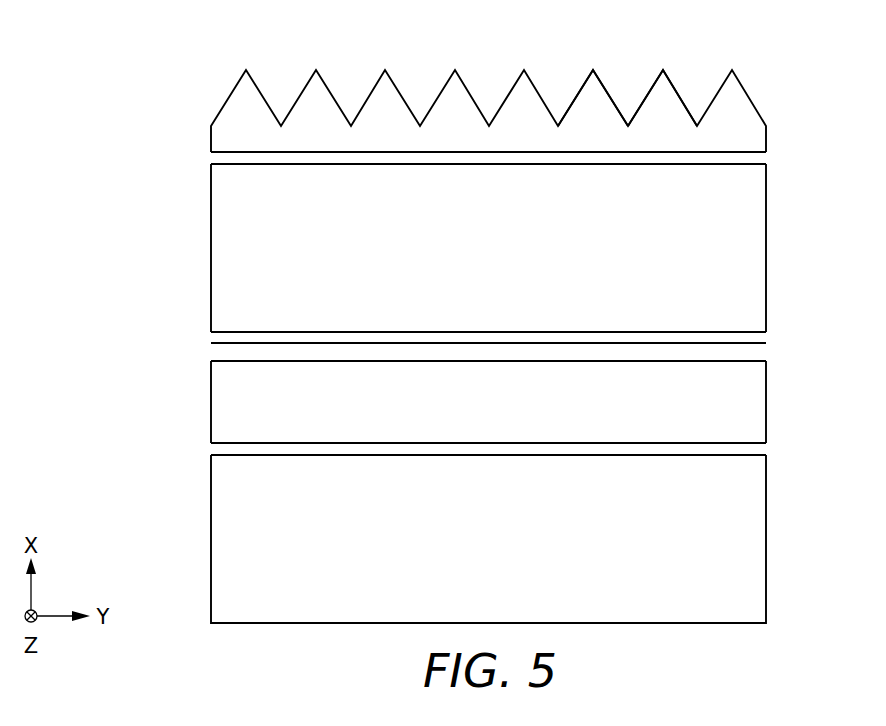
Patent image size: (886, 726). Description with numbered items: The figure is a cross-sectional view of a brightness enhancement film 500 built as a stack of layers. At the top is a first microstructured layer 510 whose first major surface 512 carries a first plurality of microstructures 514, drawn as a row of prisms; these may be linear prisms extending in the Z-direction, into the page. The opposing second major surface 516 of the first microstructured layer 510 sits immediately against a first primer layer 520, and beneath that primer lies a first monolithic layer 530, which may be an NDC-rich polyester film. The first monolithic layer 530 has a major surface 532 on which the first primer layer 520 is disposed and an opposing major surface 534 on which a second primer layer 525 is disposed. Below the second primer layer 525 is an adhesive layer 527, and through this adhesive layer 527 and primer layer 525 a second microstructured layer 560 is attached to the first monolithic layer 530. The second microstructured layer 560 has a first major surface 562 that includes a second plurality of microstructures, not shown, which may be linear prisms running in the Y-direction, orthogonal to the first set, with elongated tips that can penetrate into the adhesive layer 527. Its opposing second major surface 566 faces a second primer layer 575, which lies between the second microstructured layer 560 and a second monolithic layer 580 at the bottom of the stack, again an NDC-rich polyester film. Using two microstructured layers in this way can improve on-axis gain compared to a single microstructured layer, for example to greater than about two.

The brightness enhancement film 500 is at (479, 319).
The first microstructured layer 510 is at (527, 87).
The first major surface 512 is at (673, 85).
The first plurality of microstructures 514 is at (581, 88).
The second major surface 516 is at (729, 154).
The first primer layer 520 is at (212, 155).
The second primer layer 525 is at (755, 338).
The adhesive layer 527 is at (757, 350).
The first monolithic layer 530 is at (238, 262).
The major surface 532 is at (243, 165).
The opposing major surface 534 is at (254, 332).
The second microstructured layer 560 is at (747, 403).
The first major surface 562 is at (265, 362).
The second major surface 566 is at (265, 445).
The second primer layer 575 is at (750, 448).
The second monolithic layer 580 is at (750, 541).